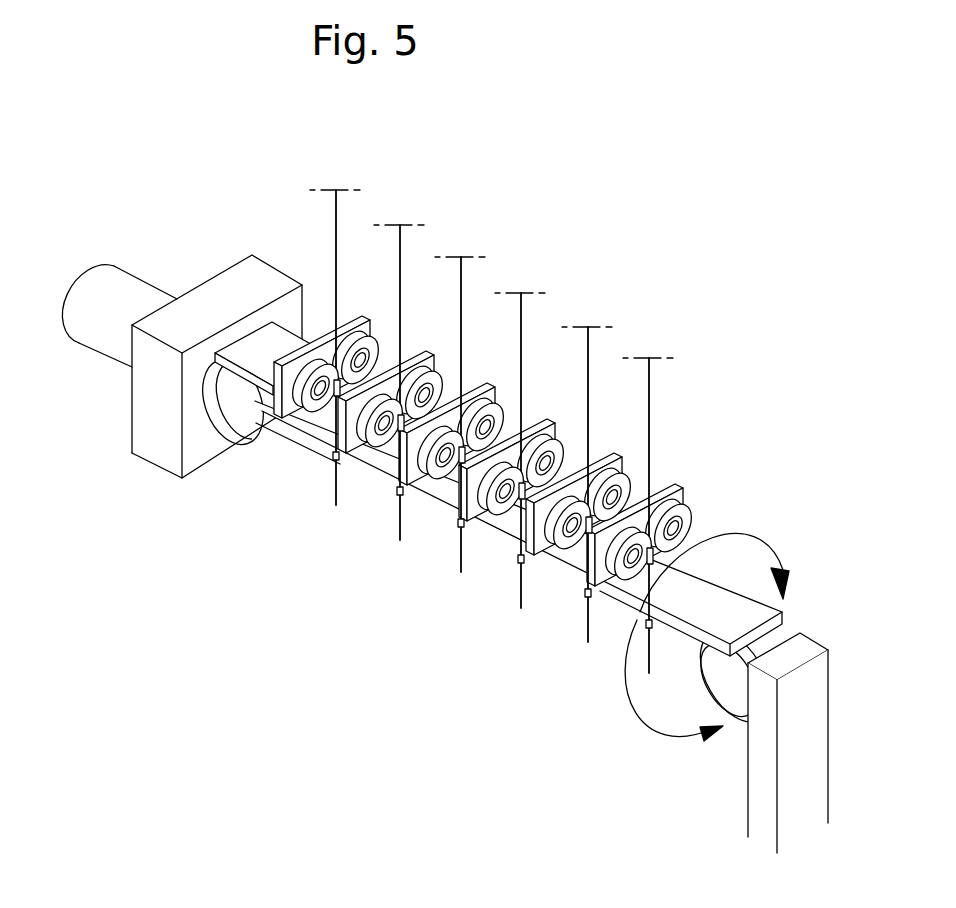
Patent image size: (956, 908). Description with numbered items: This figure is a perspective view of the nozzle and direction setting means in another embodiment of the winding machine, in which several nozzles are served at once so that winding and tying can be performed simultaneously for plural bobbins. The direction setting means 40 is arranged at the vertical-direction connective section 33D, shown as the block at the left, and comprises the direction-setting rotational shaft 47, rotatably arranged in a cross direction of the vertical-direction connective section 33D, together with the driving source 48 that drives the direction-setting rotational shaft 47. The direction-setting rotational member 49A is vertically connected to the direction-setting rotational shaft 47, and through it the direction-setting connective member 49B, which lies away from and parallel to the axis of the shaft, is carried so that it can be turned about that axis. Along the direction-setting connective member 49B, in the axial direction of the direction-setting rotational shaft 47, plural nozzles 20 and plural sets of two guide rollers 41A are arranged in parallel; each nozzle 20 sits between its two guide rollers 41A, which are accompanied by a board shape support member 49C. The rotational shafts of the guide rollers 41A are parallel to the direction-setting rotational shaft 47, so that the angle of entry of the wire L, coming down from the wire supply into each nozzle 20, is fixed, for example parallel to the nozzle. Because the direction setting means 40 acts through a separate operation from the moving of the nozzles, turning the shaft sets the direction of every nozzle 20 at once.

The driving source 48 is at (128, 307).
The vertical-direction connective section 33D is at (238, 283).
The board shape support member 49C is at (322, 330).
The direction-setting rotational member 49A is at (228, 415).
The direction-setting connective member 49B is at (730, 605).
The direction-setting rotational shaft 47 is at (248, 440).
The nozzle 20 is at (332, 456).
The guide rollers 41A is at (386, 334).
The wire L is at (334, 226).
The direction setting means 40 is at (344, 638).